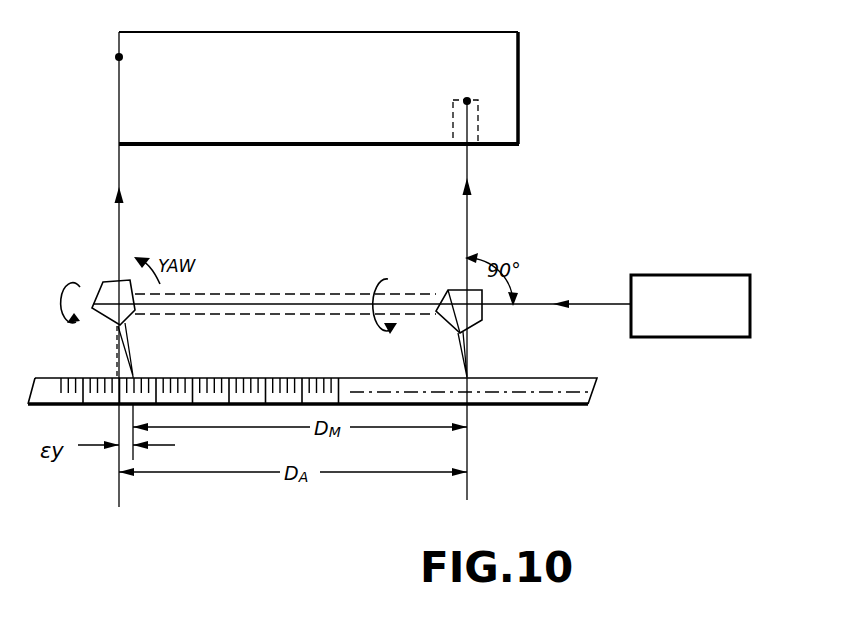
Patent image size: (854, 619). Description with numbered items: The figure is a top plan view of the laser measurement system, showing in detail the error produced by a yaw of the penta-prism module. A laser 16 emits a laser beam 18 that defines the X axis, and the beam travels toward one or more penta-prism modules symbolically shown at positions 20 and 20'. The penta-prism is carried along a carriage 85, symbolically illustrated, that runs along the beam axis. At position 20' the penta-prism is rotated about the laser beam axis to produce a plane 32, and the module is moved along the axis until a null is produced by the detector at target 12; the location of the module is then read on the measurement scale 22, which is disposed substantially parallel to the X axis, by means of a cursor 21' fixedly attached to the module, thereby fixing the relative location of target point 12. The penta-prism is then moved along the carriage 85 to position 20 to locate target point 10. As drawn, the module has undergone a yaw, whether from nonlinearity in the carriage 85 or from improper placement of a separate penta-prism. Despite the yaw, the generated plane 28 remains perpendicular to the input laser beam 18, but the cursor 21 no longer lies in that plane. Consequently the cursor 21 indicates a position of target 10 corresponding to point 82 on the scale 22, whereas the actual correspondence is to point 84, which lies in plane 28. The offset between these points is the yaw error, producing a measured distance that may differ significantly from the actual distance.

The target point 10 is at (116, 58).
The target point 12 is at (470, 98).
The laser 16 is at (718, 260).
The laser beam 18 is at (264, 303).
The penta-prism module position 20 is at (103, 287).
The penta-prism module position 20' is at (447, 291).
The cursor 21 is at (146, 349).
The cursor 21' is at (487, 354).
The measurement scale 22 is at (570, 400).
The plane 28 is at (117, 178).
The plane 32 is at (468, 170).
The point on the scale 82 is at (137, 375).
The point on the scale 84 is at (117, 373).
The carriage 85 is at (323, 278).